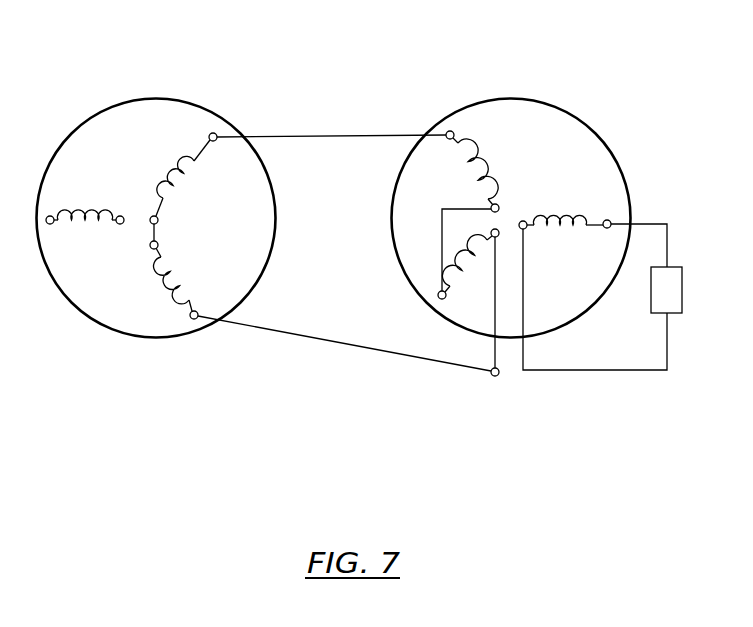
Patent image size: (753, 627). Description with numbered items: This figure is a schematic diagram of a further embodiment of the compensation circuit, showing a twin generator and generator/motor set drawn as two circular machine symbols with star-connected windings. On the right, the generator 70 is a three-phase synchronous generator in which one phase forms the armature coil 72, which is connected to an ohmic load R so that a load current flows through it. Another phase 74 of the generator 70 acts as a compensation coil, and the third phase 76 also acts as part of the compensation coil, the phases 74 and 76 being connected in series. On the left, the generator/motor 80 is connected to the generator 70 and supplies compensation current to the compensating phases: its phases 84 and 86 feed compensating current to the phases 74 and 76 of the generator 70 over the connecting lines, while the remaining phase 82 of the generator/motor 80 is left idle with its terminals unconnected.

The generator 70 is at (552, 90).
The armature coil 72 is at (565, 206).
The compensation coil phase 74 is at (482, 171).
The third phase 76 is at (467, 263).
The generator/motor 80 is at (111, 88).
The idle phase 82 is at (85, 201).
The compensating phase 84 is at (183, 178).
The compensating phase 86 is at (184, 279).